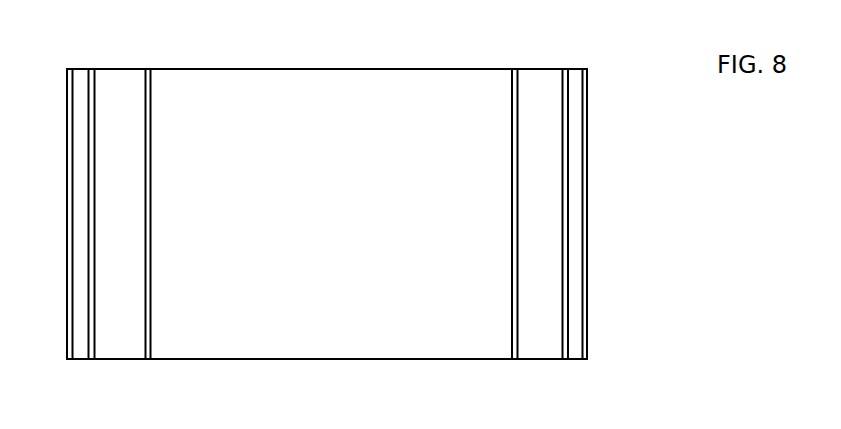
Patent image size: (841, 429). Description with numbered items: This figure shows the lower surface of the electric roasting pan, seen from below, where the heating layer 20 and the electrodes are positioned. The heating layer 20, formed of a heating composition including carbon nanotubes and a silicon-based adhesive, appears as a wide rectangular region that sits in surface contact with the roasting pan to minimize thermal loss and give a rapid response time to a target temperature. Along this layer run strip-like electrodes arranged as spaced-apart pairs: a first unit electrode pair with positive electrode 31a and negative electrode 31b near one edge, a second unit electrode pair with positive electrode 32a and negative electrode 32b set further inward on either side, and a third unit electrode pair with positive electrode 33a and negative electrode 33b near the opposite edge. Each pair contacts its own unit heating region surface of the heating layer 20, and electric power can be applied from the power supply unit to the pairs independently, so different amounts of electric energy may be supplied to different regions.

The heating layer 20 is at (357, 98).
The first unit electrode 31a is at (70, 352).
The first unit electrode 31b is at (91, 350).
The second unit electrode 32a is at (150, 335).
The second unit electrode 32b is at (513, 350).
The third unit electrode 33a is at (560, 352).
The third unit electrode 33b is at (585, 69).